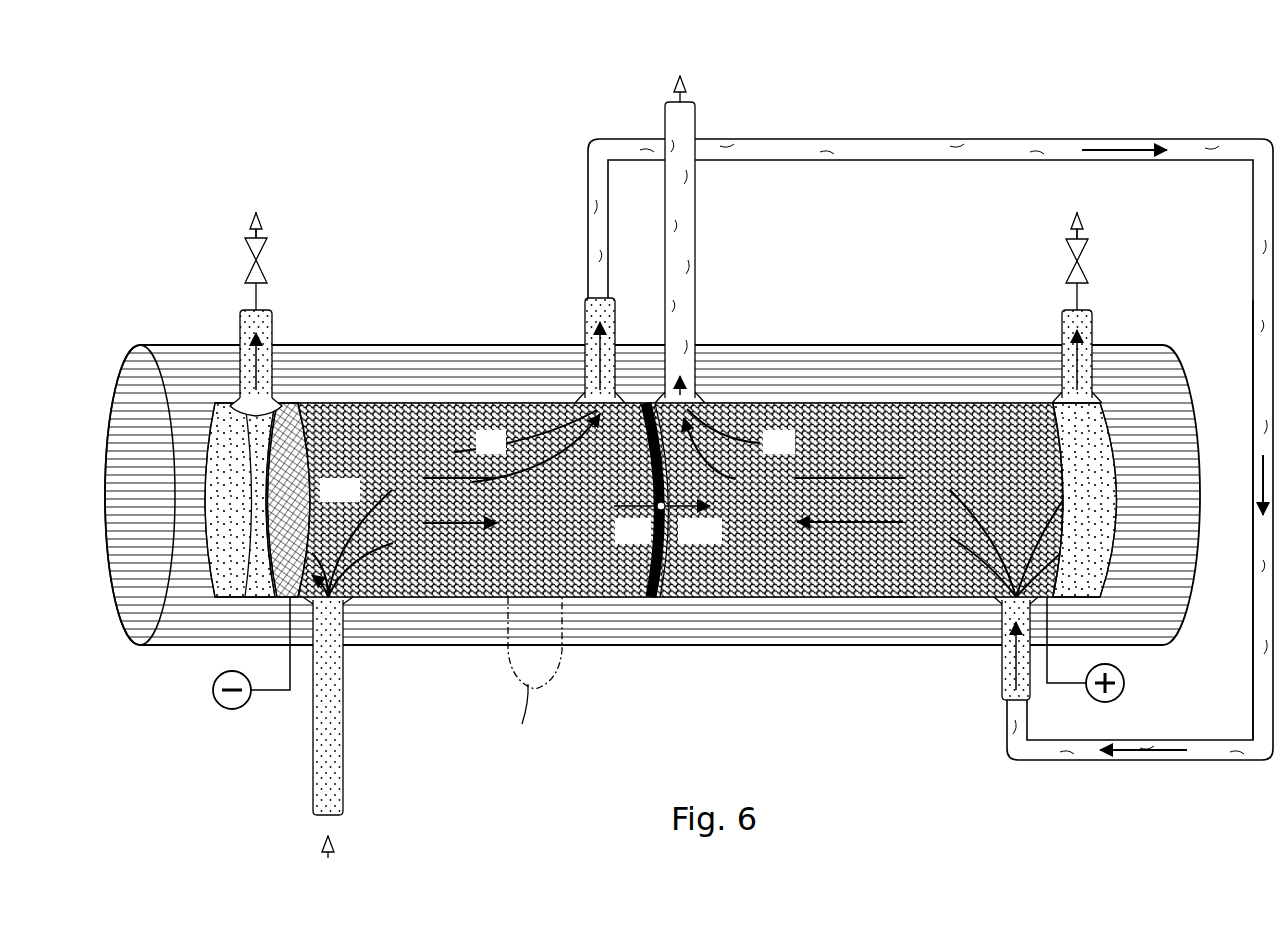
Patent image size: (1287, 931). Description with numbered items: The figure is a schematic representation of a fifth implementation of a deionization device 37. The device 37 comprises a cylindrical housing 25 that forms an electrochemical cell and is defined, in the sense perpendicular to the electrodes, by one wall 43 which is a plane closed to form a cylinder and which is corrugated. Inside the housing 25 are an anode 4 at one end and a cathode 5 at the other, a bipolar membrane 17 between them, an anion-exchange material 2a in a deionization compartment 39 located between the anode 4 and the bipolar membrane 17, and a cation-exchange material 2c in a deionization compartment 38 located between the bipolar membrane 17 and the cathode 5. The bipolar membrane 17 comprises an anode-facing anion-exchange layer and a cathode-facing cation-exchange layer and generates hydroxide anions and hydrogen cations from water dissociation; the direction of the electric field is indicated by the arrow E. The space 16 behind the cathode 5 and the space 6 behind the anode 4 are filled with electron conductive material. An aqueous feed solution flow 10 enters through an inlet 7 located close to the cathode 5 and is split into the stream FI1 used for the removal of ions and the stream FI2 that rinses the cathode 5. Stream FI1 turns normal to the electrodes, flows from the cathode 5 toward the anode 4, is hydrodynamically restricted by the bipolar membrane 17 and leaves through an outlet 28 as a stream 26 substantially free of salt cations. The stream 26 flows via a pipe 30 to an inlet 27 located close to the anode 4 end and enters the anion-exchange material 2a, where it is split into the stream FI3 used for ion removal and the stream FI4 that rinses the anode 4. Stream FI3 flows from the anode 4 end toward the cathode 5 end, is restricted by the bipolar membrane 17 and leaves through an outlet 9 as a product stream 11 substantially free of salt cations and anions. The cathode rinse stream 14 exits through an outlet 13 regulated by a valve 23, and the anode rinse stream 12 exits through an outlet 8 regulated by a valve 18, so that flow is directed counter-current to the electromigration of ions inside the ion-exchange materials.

The anion-exchange material 2a is at (880, 500).
The cation-exchange material 2c is at (479, 500).
The anode 4 is at (1063, 574).
The cathode 5 is at (247, 392).
The space behind the anode 6 is at (1133, 560).
The inlet 7 is at (343, 749).
The outlet for anode rinse stream 8 is at (1093, 330).
The outlet for product stream 9 is at (712, 270).
The aqueous feed solution flow 10 is at (315, 888).
The product stream 11 is at (667, 56).
The anode rinse stream 12 is at (1064, 192).
The outlet for cathode rinse stream 13 is at (273, 326).
The cathode rinse stream 14 is at (243, 194).
The space behind the cathode 16 is at (228, 566).
The bipolar membrane 17 is at (663, 598).
The valve 18 is at (1065, 256).
The valve 23 is at (244, 252).
The housing 25 is at (788, 616).
The stream substantially free of salt cations 26 is at (1017, 150).
The inlet 27 is at (1002, 690).
The outlet for stream substantially free of salt cations 28 is at (616, 330).
The pipe 30 is at (1220, 139).
The deionization device 37 is at (417, 182).
The deionization compartment 38 is at (476, 598).
The deionization compartment 39 is at (892, 598).
The wall 43 is at (550, 600).
The ion-removal stream FI1 is at (455, 447).
The cathode rinse stream FI2 is at (340, 490).
The ion-removal stream FI3 is at (728, 403).
The anode rinse stream FI4 is at (1103, 476).
The electric field direction E is at (685, 714).